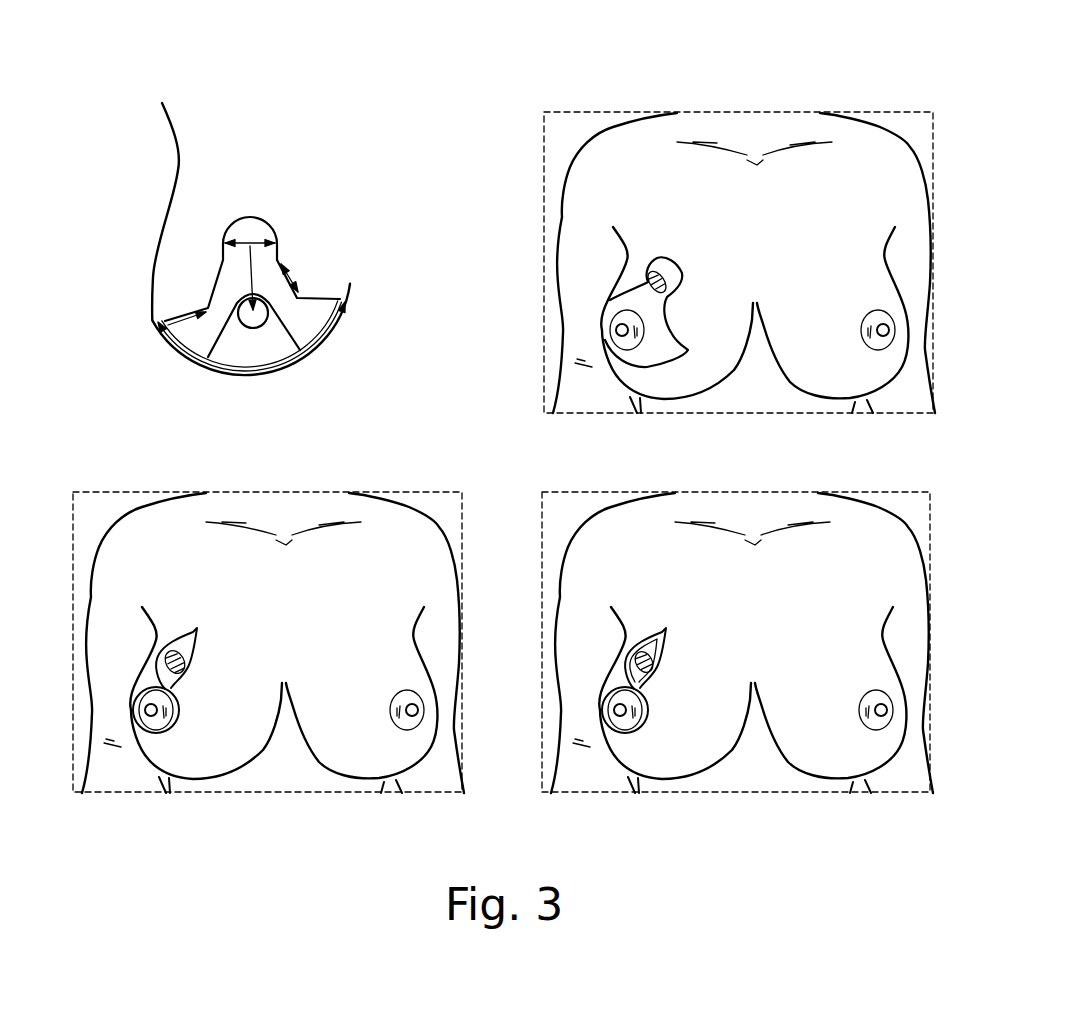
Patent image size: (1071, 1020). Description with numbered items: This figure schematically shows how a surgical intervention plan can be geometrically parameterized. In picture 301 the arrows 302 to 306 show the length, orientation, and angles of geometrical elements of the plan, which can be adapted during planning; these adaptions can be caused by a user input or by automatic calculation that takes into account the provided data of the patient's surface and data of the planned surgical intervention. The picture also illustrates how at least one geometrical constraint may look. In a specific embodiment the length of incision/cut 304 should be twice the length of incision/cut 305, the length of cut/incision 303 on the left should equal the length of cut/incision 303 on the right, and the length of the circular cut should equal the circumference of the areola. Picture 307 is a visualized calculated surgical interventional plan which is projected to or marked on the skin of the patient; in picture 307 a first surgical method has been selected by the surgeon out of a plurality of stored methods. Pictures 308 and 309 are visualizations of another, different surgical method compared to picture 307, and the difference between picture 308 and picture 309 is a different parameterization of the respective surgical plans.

The picture 301 is at (240, 231).
The arrow 302 is at (260, 243).
The cut/incision 303 is at (290, 273).
The incision/cut 304 is at (335, 337).
The incision/cut 305 is at (183, 308).
The arrow 306 is at (260, 277).
The picture 307 is at (796, 97).
The picture 308 is at (277, 783).
The picture 309 is at (765, 785).